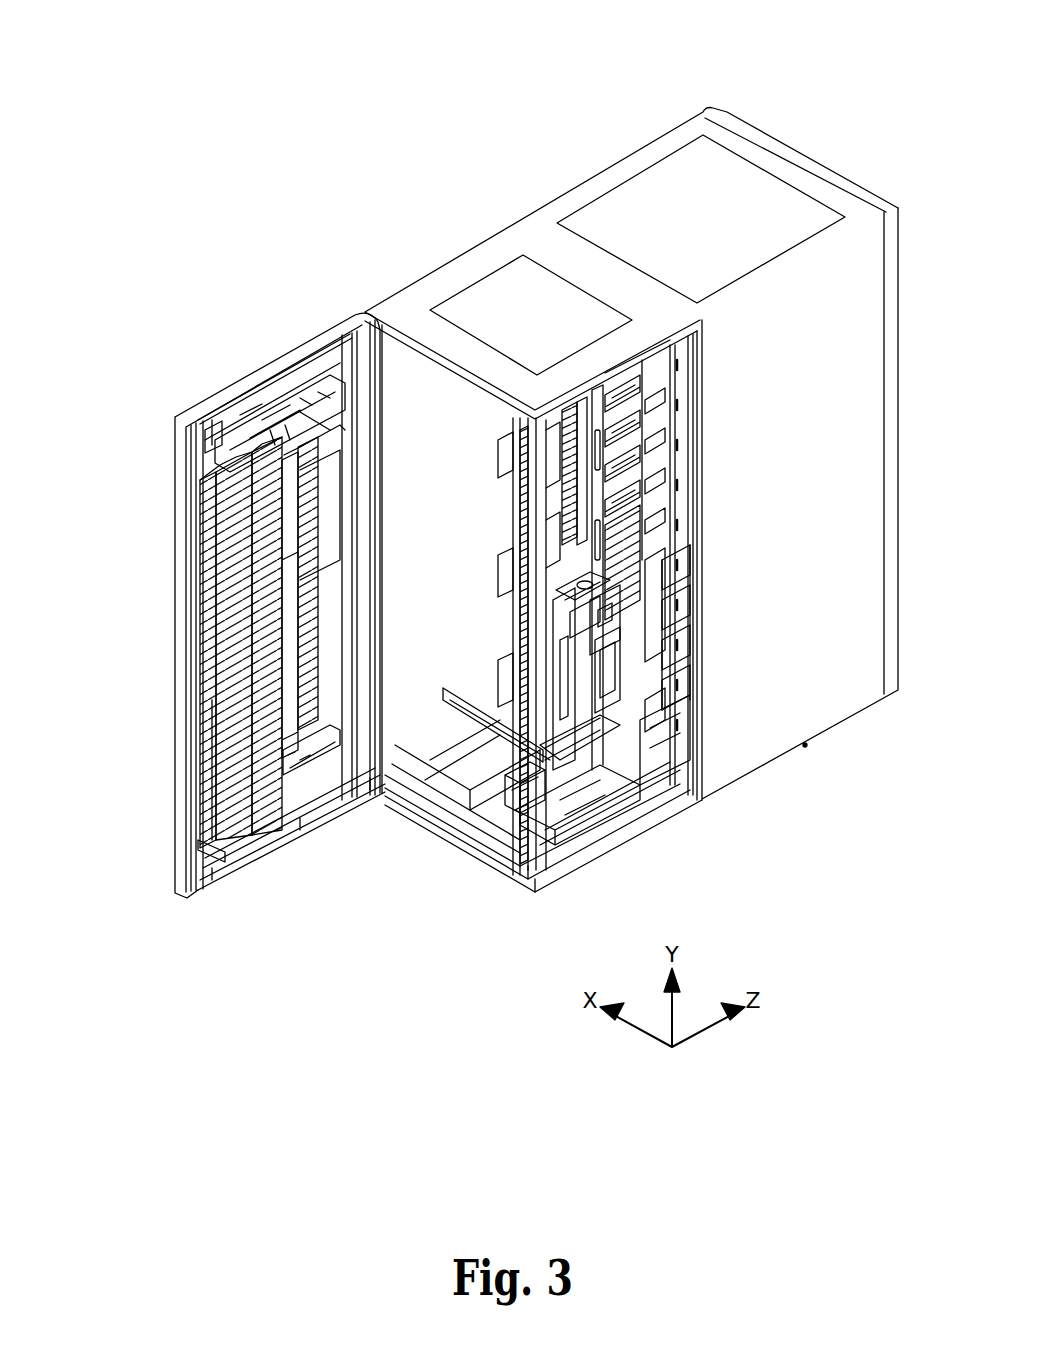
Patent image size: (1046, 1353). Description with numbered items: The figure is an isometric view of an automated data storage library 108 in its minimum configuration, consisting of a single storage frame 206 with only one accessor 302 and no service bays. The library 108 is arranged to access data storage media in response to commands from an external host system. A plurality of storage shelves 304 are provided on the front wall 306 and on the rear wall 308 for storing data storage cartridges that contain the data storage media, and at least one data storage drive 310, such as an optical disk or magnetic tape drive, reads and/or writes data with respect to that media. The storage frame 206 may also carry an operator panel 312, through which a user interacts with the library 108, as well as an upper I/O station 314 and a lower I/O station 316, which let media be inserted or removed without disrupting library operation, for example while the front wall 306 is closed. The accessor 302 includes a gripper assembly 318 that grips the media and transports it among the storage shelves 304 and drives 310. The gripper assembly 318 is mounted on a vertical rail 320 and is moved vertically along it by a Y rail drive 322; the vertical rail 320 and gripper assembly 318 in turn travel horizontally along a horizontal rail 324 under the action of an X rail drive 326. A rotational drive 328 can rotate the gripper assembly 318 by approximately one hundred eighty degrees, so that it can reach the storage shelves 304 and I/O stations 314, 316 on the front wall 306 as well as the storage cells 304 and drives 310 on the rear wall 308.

The automated data storage library 108 is at (878, 75).
The storage frame 206 is at (716, 172).
The accessor 302 is at (572, 793).
The storage shelves 304 is at (215, 690).
The front wall 306 is at (190, 556).
The rear wall 308 is at (520, 481).
The data storage drive 310 is at (632, 422).
The operator panel 312 is at (343, 443).
The upper I/O station 314 is at (328, 470).
The lower I/O station 316 is at (325, 628).
The gripper assembly 318 is at (632, 636).
The vertical rail 320 is at (552, 661).
The Y rail drive 322 is at (520, 590).
The horizontal rail 324 is at (465, 700).
The X rail drive 326 is at (510, 800).
The rotational drive 328 is at (620, 587).